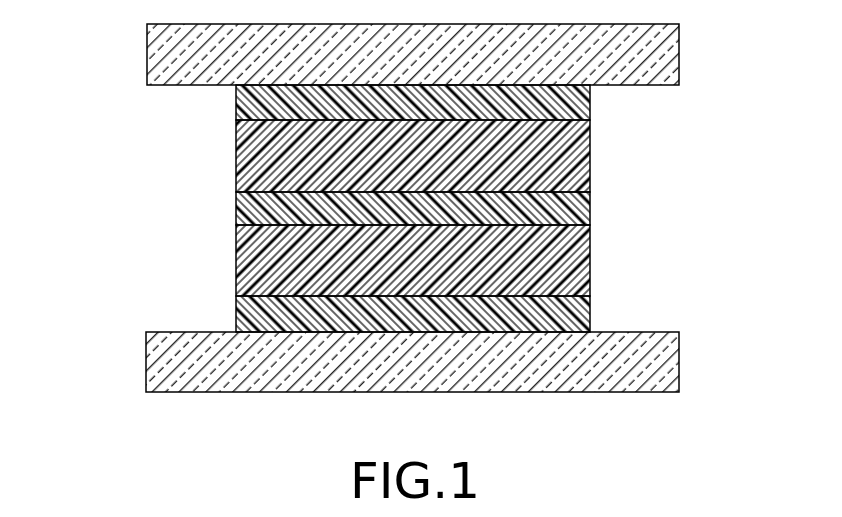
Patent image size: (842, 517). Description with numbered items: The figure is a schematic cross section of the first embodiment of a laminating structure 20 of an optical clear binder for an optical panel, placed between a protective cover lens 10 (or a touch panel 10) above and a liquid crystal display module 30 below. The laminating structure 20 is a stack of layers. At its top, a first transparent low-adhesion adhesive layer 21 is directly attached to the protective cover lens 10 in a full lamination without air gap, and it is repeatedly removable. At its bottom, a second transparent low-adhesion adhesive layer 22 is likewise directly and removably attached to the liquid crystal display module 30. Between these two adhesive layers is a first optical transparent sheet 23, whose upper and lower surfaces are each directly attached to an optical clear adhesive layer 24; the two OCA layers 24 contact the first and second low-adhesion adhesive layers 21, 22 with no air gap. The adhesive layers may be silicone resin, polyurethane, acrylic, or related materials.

The protective cover lens 10 is at (667, 53).
The laminating structure 20 is at (367, 203).
The first transparent low-adhesion adhesive layer 21 is at (592, 95).
The second transparent low-adhesion adhesive layer 22 is at (590, 307).
The first optical transparent sheet 23 is at (590, 203).
The optical clear adhesive layer 24 is at (246, 152).
The liquid crystal display module 30 is at (668, 355).